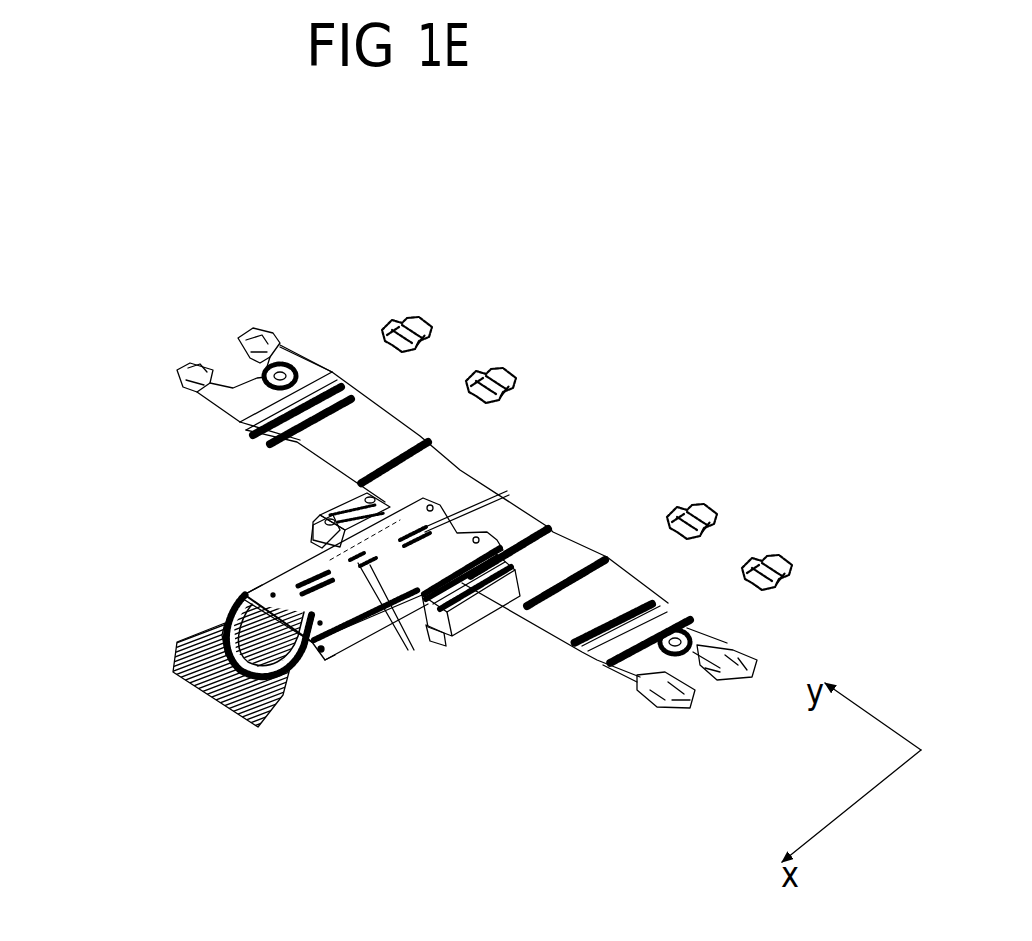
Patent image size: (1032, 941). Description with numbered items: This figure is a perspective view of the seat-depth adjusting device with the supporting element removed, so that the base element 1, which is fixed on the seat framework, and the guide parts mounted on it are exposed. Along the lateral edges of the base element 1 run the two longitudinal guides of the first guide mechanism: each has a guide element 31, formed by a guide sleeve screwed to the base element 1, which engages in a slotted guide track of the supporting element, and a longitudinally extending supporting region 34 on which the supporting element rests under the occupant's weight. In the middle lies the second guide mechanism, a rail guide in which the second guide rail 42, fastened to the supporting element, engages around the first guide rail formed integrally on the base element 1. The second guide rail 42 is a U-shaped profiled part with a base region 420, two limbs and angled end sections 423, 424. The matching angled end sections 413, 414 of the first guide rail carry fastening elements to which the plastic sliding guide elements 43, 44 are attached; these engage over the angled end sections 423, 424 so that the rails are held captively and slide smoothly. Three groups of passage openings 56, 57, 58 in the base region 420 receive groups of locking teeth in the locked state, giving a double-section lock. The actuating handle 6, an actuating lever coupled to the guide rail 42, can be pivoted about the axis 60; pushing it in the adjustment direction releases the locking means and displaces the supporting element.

The base element 1 is at (385, 410).
The guide element 31 is at (286, 366).
The supporting region 34 is at (245, 425).
The second guide rail 42 is at (245, 600).
The sliding guide element 43 is at (318, 522).
The sliding guide element 44 is at (472, 637).
The angled end section 413 is at (316, 545).
The angled end section 414 is at (438, 630).
The base region 420 is at (346, 598).
The angled end section 423 is at (245, 595).
The angled end section 424 is at (337, 665).
The passage openings 56 is at (497, 512).
The passage openings 57 is at (399, 623).
The passage openings 58 is at (330, 592).
The actuating handle 6 is at (237, 712).
The pivot axis 60 is at (320, 655).